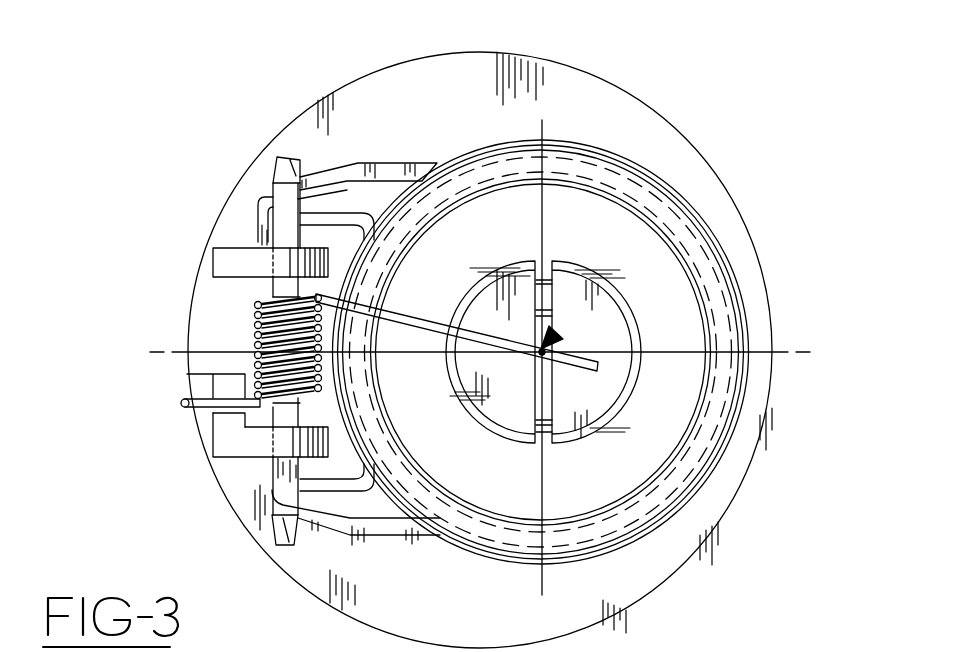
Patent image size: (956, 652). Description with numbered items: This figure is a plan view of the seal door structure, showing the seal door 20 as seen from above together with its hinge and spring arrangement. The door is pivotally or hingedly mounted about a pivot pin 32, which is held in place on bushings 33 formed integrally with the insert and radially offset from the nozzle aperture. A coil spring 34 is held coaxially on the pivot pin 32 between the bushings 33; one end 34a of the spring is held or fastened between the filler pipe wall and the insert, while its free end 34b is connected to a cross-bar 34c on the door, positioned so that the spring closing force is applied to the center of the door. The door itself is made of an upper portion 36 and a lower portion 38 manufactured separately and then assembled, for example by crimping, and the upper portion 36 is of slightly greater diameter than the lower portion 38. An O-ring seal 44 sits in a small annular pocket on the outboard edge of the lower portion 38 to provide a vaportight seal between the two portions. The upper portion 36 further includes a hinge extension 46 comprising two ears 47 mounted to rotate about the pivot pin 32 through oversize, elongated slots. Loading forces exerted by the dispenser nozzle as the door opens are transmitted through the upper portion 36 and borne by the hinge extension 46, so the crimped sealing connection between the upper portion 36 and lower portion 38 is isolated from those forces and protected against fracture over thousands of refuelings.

The seal door 20 is at (530, 78).
The pivot pin 32 is at (302, 155).
The bushings 33 is at (225, 266).
The coil spring 34 is at (255, 322).
The end of spring 34a is at (185, 406).
The free end 34b is at (566, 367).
The cross-bar 34c is at (548, 342).
The upper portion 36 is at (633, 158).
The lower portion 38 is at (680, 427).
The O-ring seal 44 is at (708, 268).
The hinge extension 46 is at (393, 162).
The ears 47 is at (263, 215).